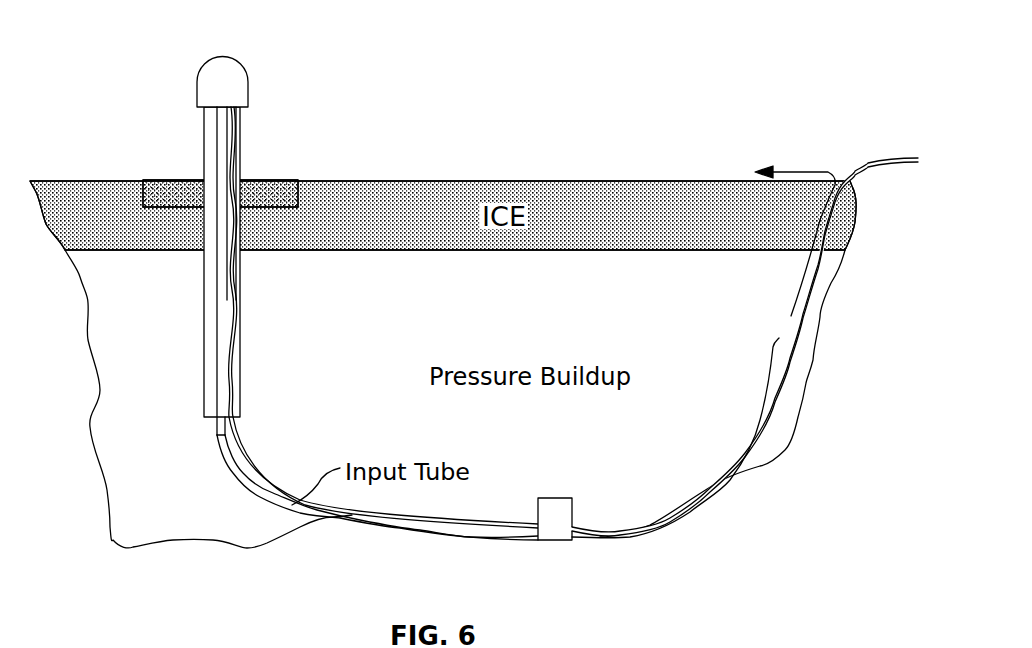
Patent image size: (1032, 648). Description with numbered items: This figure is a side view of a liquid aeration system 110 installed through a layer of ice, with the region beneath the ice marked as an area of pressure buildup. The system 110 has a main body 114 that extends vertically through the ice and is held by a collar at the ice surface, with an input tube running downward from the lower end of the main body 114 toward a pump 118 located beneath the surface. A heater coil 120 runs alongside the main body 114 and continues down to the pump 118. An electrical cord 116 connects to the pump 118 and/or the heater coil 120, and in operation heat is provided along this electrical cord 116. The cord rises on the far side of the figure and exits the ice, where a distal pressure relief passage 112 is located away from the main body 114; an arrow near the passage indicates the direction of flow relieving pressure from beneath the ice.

The liquid aeration system 110 is at (115, 58).
The distal pressure relief passage 112 is at (890, 158).
The main body 114 is at (209, 137).
The electrical cord 116 is at (813, 322).
The pump 118 is at (557, 532).
The heater coil 120 is at (233, 315).